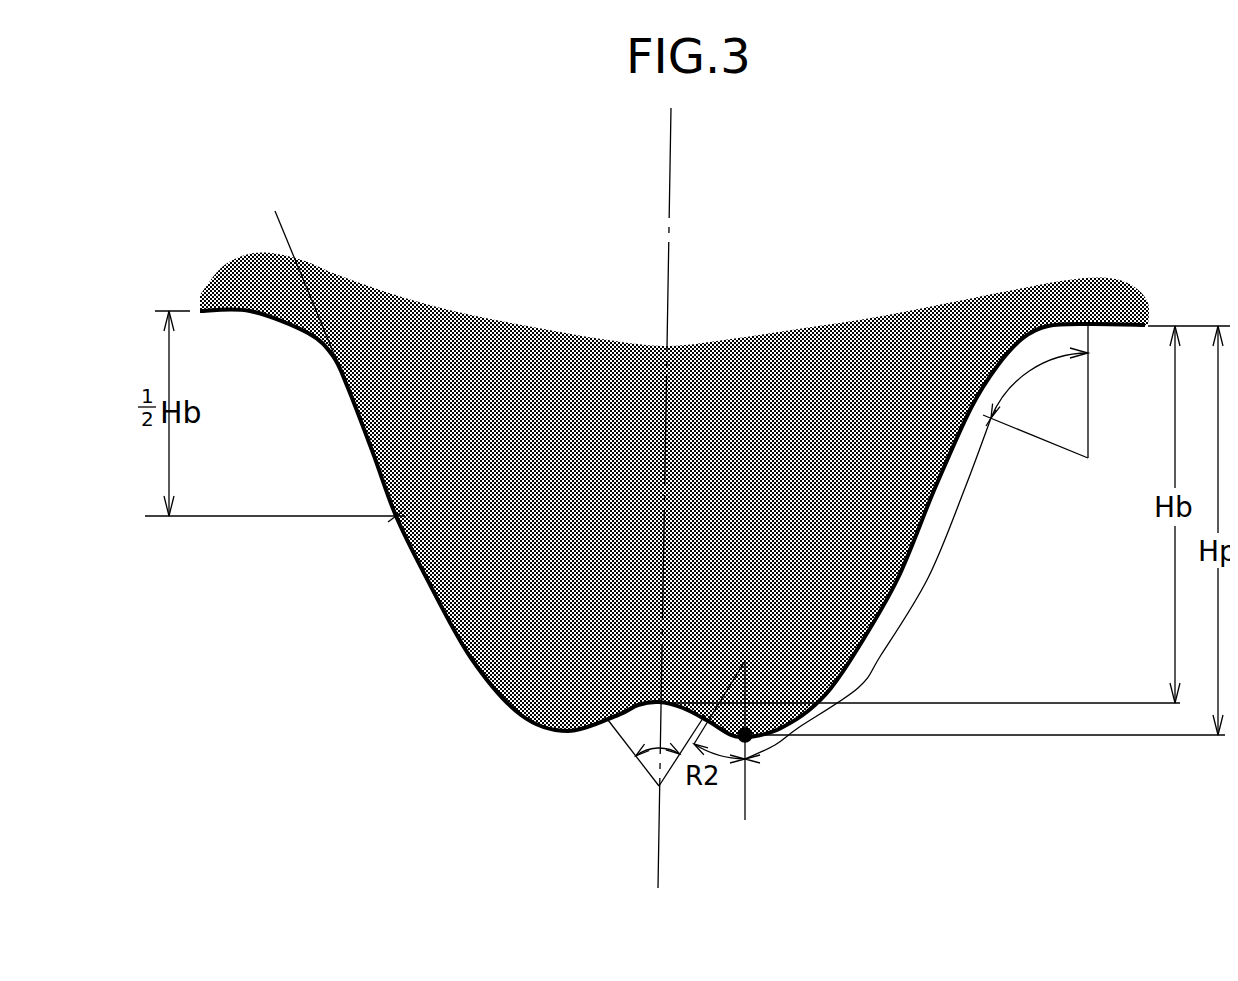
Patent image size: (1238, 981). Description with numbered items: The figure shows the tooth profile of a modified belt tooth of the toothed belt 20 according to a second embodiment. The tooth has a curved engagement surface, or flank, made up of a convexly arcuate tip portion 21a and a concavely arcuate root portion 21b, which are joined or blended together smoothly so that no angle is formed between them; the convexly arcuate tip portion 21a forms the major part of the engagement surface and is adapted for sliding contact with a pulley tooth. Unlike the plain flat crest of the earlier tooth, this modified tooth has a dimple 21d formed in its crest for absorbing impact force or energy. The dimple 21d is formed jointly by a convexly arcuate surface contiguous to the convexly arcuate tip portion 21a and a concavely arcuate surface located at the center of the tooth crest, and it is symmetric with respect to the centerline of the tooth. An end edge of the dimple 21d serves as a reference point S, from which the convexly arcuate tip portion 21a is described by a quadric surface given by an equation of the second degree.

The toothed belt 20 is at (738, 514).
The convexly arcuate tip portion 21a is at (663, 120).
The concavely arcuate root portion 21b is at (997, 351).
The dimple 21d is at (623, 701).
The reference point S is at (740, 731).